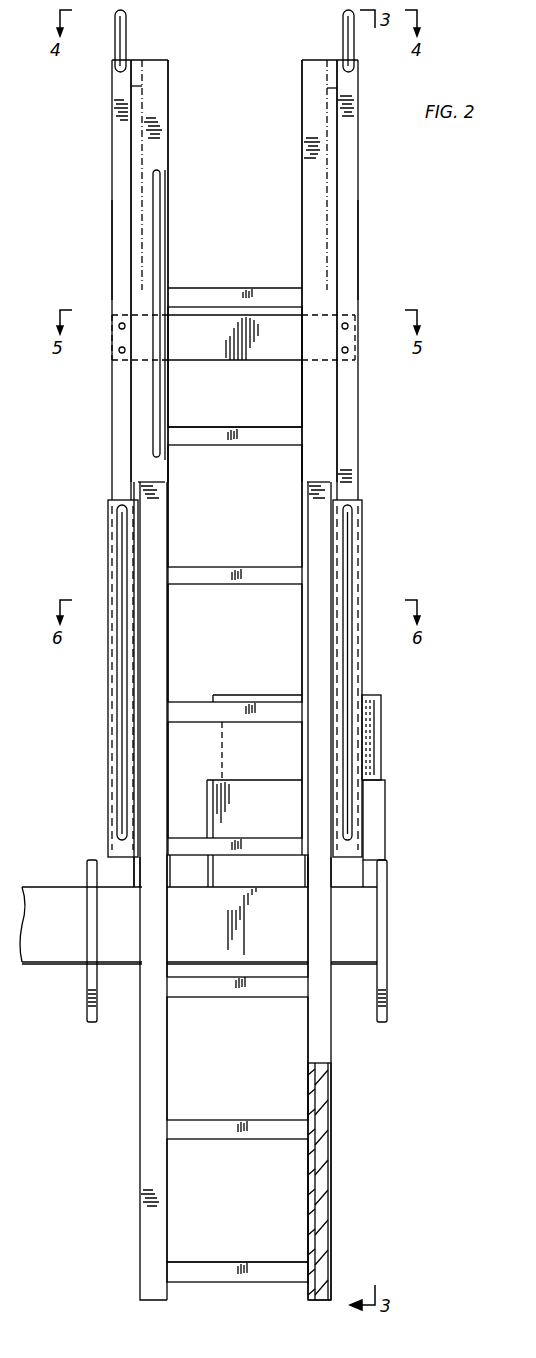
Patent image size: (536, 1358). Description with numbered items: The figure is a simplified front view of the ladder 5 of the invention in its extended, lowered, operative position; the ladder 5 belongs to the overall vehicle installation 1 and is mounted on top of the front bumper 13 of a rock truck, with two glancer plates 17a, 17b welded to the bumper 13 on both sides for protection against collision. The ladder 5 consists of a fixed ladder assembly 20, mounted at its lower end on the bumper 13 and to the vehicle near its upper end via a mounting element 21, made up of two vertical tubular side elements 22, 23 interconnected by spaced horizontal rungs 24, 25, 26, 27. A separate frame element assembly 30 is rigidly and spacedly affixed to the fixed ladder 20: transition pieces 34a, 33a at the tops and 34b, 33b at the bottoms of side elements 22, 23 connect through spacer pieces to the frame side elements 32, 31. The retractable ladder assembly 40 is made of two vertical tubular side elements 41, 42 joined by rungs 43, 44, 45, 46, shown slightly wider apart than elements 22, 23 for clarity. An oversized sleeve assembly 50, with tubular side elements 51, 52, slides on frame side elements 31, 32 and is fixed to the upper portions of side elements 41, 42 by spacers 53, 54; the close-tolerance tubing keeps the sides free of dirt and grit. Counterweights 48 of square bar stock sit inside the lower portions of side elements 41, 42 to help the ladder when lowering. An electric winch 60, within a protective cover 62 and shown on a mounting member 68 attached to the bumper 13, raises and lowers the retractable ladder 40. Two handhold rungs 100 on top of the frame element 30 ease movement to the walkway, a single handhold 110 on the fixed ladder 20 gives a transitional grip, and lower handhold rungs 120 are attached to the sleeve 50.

The telescoping ladder 1 is at (419, 457).
The ladder 5 is at (380, 218).
The front bumper 13 is at (48, 887).
The glancer plate 17a is at (388, 976).
The glancer plate 17b is at (88, 1008).
The fixed ladder assembly 20 is at (162, 192).
The mounting element 21 is at (278, 362).
The vertical tubular side element 22 is at (168, 126).
The vertical tubular side element 23 is at (302, 136).
The rung 24 is at (245, 296).
The rung 25 is at (232, 430).
The rung 26 is at (238, 574).
The rung 27 is at (190, 702).
The frame element assembly 30 is at (112, 250).
The side element 31 is at (358, 172).
The side element 32 is at (112, 198).
The transition piece 33a is at (327, 62).
The transition piece 33b is at (338, 890).
The transition piece 34a is at (142, 62).
The transition piece 34b is at (136, 890).
The retractable ladder assembly 40 is at (238, 1118).
The vertical tubular side element 41 is at (333, 1052).
The vertical tubular side element 42 is at (142, 1088).
The rung 43 is at (228, 1262).
The rung 44 is at (242, 1140).
The rung 45 is at (230, 998).
The rung 46 is at (188, 838).
The counterweight 48 is at (333, 1130).
The sleeve assembly 50 is at (108, 516).
The vertical tubular side element 51 is at (362, 560).
The vertical tubular side element 52 is at (108, 556).
The spacer 53 is at (330, 494).
The spacer 54 is at (140, 494).
The electric winch 60 is at (378, 750).
The protective cover 62 is at (382, 700).
The mounting member 68 is at (386, 810).
The handhold rung 100 is at (114, 48).
The single handhold 110 is at (165, 240).
The lower handhold rung 120 is at (348, 600).